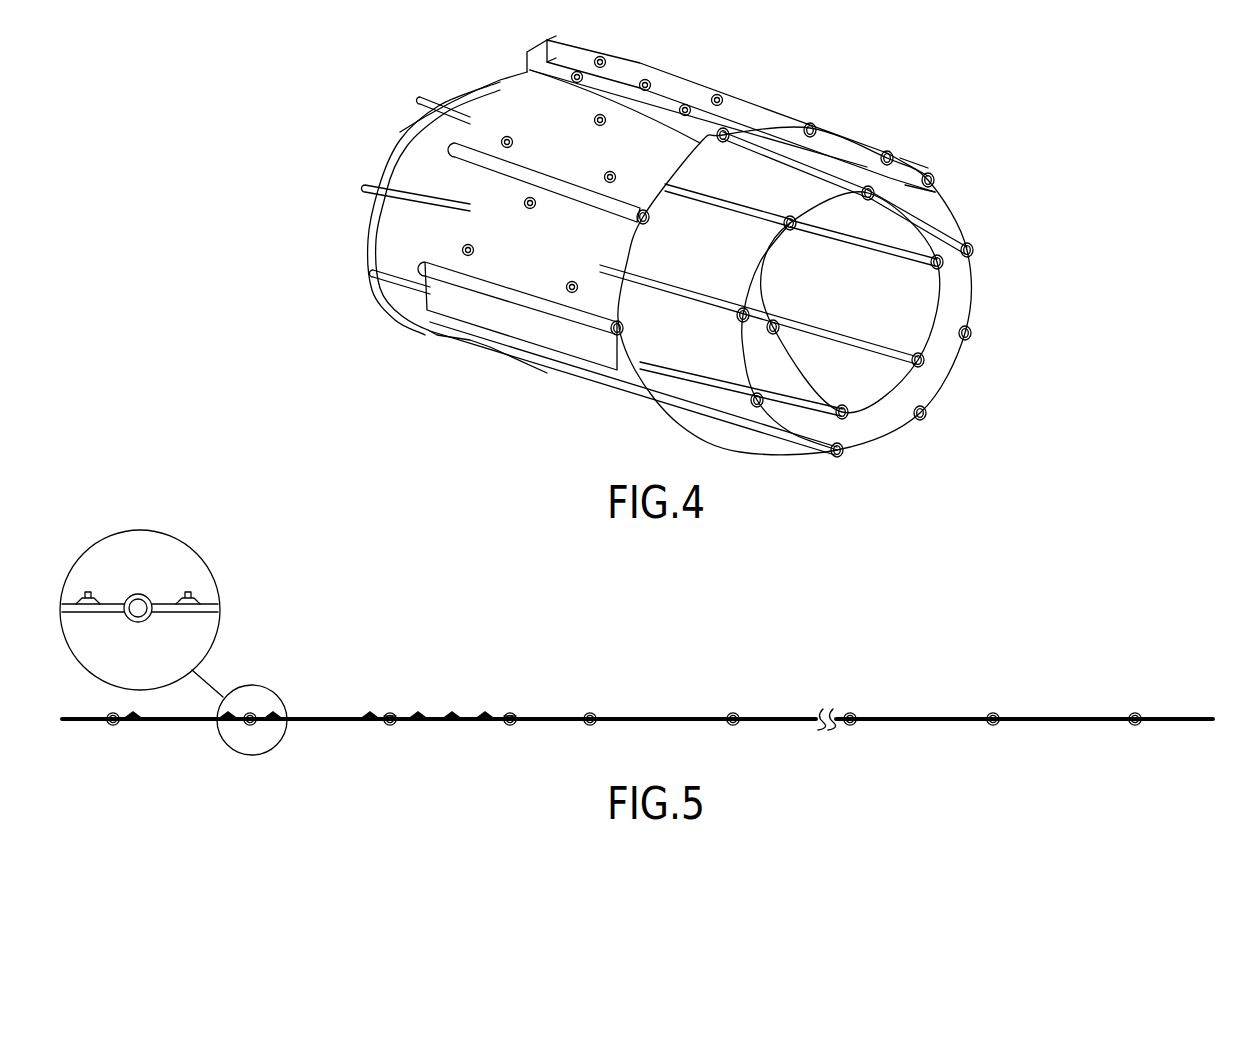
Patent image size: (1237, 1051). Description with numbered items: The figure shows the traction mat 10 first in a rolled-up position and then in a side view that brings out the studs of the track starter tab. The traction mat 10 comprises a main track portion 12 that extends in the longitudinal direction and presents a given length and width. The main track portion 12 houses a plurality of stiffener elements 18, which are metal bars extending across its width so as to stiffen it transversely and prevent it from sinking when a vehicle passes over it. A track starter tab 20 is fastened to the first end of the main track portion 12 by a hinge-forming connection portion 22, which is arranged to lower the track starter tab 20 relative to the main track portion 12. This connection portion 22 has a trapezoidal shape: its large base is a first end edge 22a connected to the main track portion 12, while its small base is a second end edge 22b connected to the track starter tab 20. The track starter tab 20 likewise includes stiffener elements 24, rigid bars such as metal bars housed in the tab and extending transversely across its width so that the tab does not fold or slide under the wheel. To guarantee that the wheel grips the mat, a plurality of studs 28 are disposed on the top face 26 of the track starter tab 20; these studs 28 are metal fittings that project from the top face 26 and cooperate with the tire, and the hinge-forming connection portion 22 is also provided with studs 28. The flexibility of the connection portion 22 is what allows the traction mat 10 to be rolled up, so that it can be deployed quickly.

In FIG. 4, the traction mat 10 is at (988, 112).
In FIG. 5, the traction mat 10 is at (915, 655).
In FIG. 4, the main track portion 12 is at (945, 383).
In FIG. 5, the main track portion 12 is at (778, 714).
In FIG. 4, the stiffener elements 18 is at (878, 242).
In FIG. 5, the stiffener elements 18 is at (590, 713).
In FIG. 4, the track starter tab 20 is at (488, 100).
In FIG. 5, the track starter tab 20 is at (139, 590).
In FIG. 4, the hinge-forming connection portion 22 is at (672, 92).
In FIG. 5, the hinge-forming connection portion 22 is at (452, 726).
In FIG. 4, the first end edge 22a is at (780, 115).
In FIG. 5, the first end edge 22a is at (510, 713).
In FIG. 4, the second end edge 22b is at (578, 45).
In FIG. 5, the second end edge 22b is at (392, 713).
In FIG. 4, the stiffener elements 24 is at (548, 188).
In FIG. 5, the stiffener elements 24 is at (113, 727).
In FIG. 4, the top face 26 is at (458, 177).
In FIG. 5, the top face 26 is at (184, 725).
In FIG. 4, the studs 28 is at (715, 100).
In FIG. 5, the studs 28 is at (485, 713).